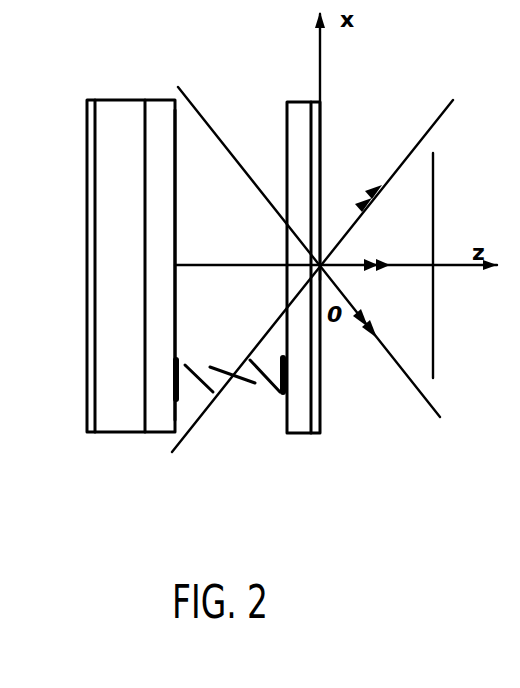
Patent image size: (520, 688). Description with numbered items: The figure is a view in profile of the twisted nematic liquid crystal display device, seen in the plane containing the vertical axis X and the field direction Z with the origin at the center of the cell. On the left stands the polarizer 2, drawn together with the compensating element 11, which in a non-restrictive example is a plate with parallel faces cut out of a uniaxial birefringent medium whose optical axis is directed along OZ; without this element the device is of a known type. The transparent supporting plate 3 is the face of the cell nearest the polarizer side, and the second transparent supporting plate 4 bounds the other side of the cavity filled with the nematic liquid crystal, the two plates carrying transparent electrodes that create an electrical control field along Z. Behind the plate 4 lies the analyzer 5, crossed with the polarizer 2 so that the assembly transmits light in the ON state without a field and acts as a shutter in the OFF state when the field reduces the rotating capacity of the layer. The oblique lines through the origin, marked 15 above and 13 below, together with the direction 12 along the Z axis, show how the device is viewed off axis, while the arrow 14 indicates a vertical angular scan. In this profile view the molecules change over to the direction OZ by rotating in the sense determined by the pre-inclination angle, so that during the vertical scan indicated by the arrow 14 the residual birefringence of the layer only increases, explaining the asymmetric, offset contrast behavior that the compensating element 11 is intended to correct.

The polarizer 2 is at (85, 100).
The compensating element 11 is at (131, 100).
The transparent supporting plate 3 is at (176, 198).
The transparent supporting plate 4 is at (287, 147).
The analyzer 5 is at (322, 148).
The transmitted beam along z-axis 12 is at (410, 263).
The deflected beam (lower) 13 is at (384, 352).
The arrow indicating vertical angular scan 14 is at (436, 205).
The deflected beam (upper) 15 is at (437, 118).